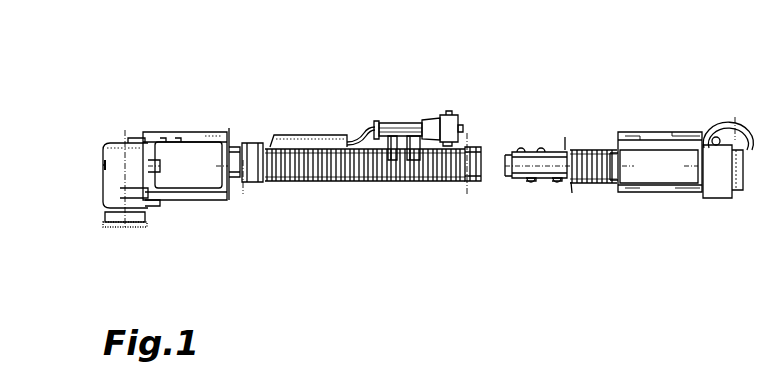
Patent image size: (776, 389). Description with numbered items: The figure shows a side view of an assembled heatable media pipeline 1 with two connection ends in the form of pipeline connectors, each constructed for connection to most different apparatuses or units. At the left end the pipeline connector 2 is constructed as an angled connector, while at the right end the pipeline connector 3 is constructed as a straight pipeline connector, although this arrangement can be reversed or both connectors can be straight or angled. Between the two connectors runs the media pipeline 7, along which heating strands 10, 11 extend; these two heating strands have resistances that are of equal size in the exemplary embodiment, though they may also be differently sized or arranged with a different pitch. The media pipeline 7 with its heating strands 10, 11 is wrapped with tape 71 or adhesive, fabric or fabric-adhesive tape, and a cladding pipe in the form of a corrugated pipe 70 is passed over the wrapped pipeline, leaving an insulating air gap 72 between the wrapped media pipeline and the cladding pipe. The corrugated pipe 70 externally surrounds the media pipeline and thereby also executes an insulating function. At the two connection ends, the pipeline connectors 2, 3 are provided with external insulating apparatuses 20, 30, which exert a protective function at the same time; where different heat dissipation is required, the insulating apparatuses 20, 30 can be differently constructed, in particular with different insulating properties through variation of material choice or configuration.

The heatable media pipeline 1 is at (297, 83).
The pipeline connector 2 is at (169, 151).
The insulating apparatus 20 is at (130, 146).
The media pipeline 7 is at (329, 158).
The corrugated pipe 70 is at (394, 158).
The tape 71 is at (522, 158).
The insulating air gap 72 is at (475, 147).
The heating strand 10 is at (528, 182).
The heating strand 11 is at (557, 182).
The pipeline connector 3 is at (655, 144).
The insulating apparatus 30 is at (692, 146).